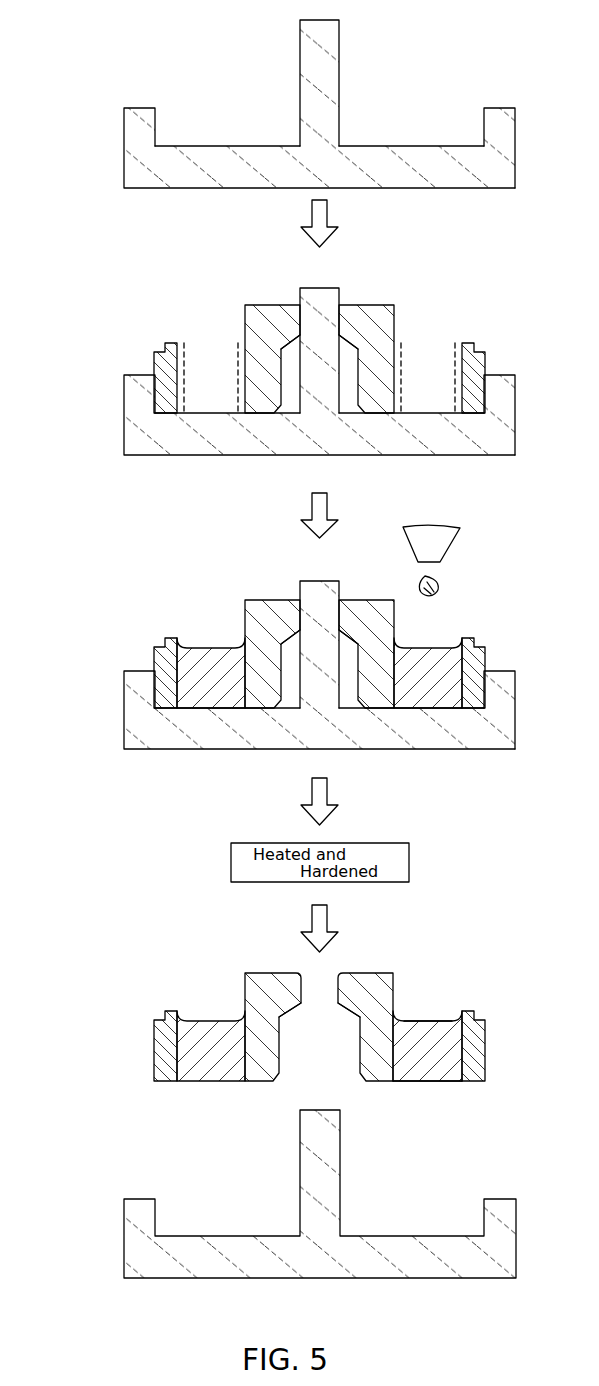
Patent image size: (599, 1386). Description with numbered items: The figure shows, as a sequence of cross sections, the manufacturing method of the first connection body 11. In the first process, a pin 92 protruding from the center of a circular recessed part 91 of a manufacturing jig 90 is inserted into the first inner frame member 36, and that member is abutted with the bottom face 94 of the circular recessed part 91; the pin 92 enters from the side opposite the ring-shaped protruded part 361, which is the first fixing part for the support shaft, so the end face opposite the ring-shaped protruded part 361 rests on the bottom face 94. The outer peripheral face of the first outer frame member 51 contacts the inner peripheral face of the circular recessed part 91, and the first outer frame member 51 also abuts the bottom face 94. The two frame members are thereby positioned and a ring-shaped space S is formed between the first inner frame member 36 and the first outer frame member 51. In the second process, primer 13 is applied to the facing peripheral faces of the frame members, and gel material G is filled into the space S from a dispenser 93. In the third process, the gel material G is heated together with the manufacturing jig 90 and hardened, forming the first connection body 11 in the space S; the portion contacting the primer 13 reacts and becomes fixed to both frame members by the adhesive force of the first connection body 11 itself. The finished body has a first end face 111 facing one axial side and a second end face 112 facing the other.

The manufacturing jig 90 is at (100, 156).
The circular recessed part 91 is at (483, 125).
The pin 92 is at (323, 20).
The bottom face 94 is at (412, 146).
The first inner frame member 36 is at (368, 307).
The ring-shaped protruded part 361 is at (348, 313).
The first outer frame member 51 is at (467, 343).
The primer 13 is at (455, 355).
The ring-shaped space S is at (220, 384).
The dispenser 93 is at (437, 550).
The gel material G is at (440, 585).
The first connection body 11 is at (413, 1027).
The second end face 112 is at (440, 1018).
The first end face 111 is at (437, 1081).